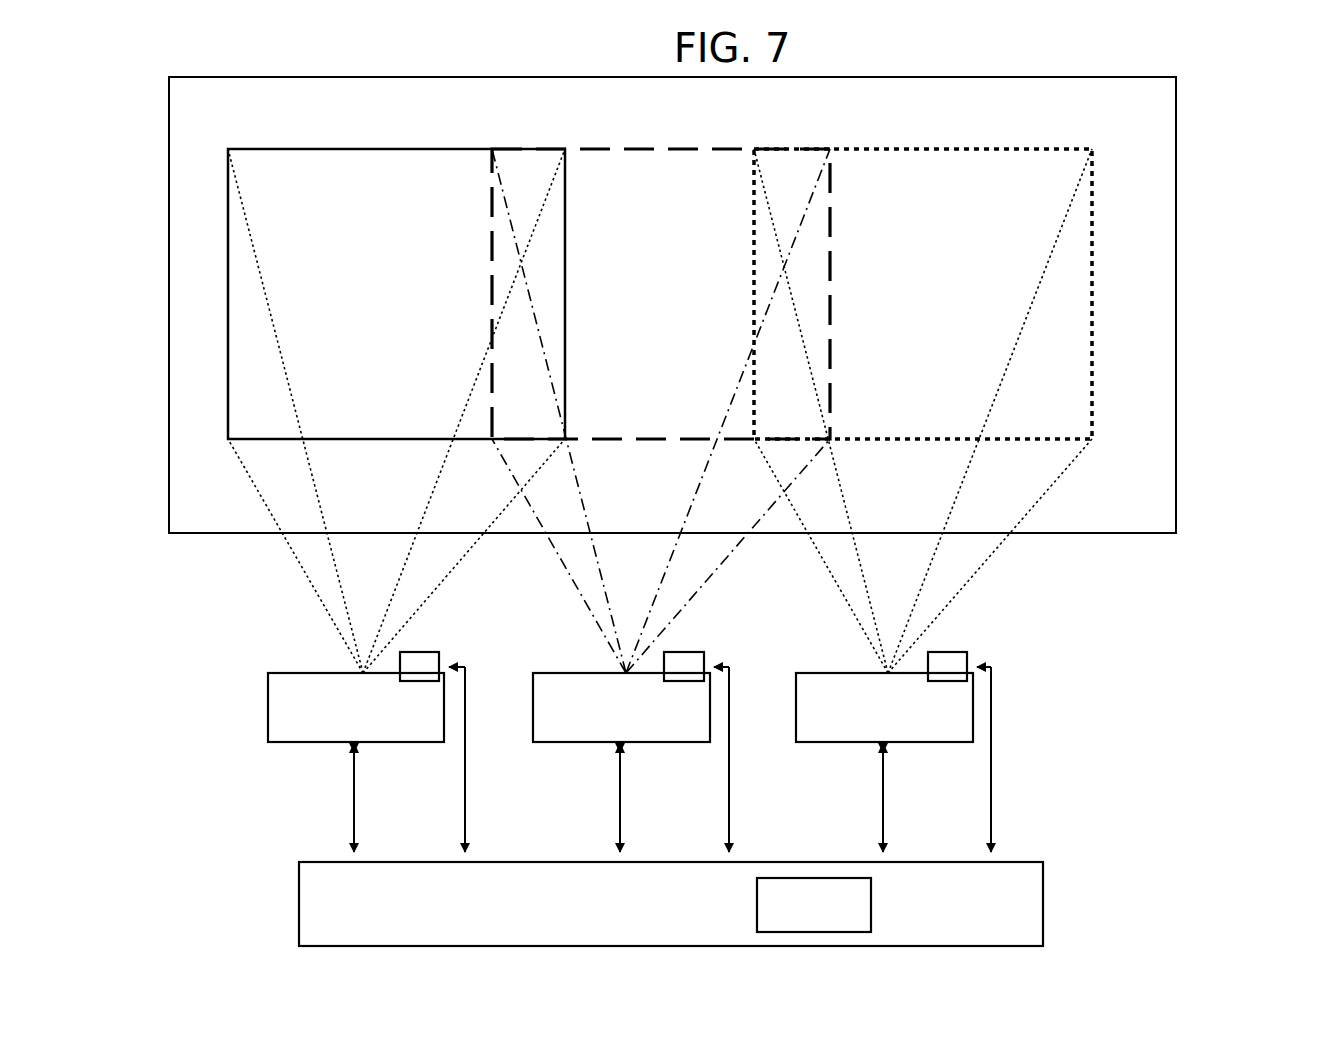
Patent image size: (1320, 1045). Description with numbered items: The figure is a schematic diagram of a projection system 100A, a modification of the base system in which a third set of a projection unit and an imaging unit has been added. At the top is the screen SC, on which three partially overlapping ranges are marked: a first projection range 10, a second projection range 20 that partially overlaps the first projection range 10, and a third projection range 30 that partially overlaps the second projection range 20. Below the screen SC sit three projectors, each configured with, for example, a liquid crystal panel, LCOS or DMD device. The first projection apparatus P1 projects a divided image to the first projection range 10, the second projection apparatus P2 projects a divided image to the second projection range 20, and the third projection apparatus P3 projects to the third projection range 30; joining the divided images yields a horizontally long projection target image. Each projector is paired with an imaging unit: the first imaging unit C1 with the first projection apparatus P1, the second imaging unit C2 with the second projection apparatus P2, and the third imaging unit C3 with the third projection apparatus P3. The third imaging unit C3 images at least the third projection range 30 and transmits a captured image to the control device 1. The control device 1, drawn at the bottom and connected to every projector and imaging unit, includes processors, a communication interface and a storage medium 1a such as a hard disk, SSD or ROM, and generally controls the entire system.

The screen SC is at (1177, 302).
The first projection range 10 is at (382, 149).
The second projection range 20 is at (680, 149).
The third projection range 30 is at (943, 149).
The first projection apparatus P1 is at (268, 705).
The second projection apparatus P2 is at (710, 698).
The third projection apparatus P3 is at (973, 698).
The first imaging unit C1 is at (418, 652).
The second imaging unit C2 is at (683, 652).
The third imaging unit C3 is at (946, 652).
The control device 1 is at (299, 906).
The storage medium 1a is at (808, 878).
The projection system 100A is at (1072, 775).